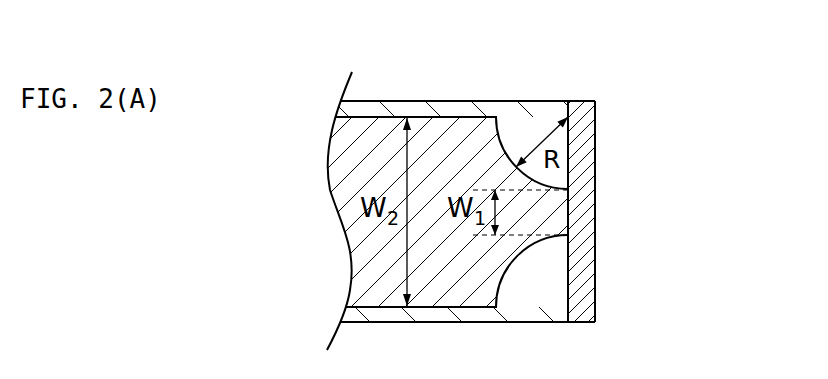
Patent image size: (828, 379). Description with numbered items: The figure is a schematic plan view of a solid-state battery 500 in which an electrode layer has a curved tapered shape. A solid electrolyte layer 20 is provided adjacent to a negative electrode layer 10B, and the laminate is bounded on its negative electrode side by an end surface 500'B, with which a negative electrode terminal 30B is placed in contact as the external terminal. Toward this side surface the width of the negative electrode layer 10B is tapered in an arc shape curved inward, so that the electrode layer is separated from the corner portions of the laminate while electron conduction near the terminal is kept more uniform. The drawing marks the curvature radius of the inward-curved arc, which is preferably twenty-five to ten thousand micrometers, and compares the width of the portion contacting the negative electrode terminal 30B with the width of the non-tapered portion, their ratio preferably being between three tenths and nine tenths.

The solid-state battery 500 is at (481, 181).
The solid electrolyte layer 20 is at (433, 110).
The negative electrode layer 10B is at (568, 205).
The negative electrode side end surface 500'B is at (646, 211).
The negative electrode terminal 30B is at (594, 299).